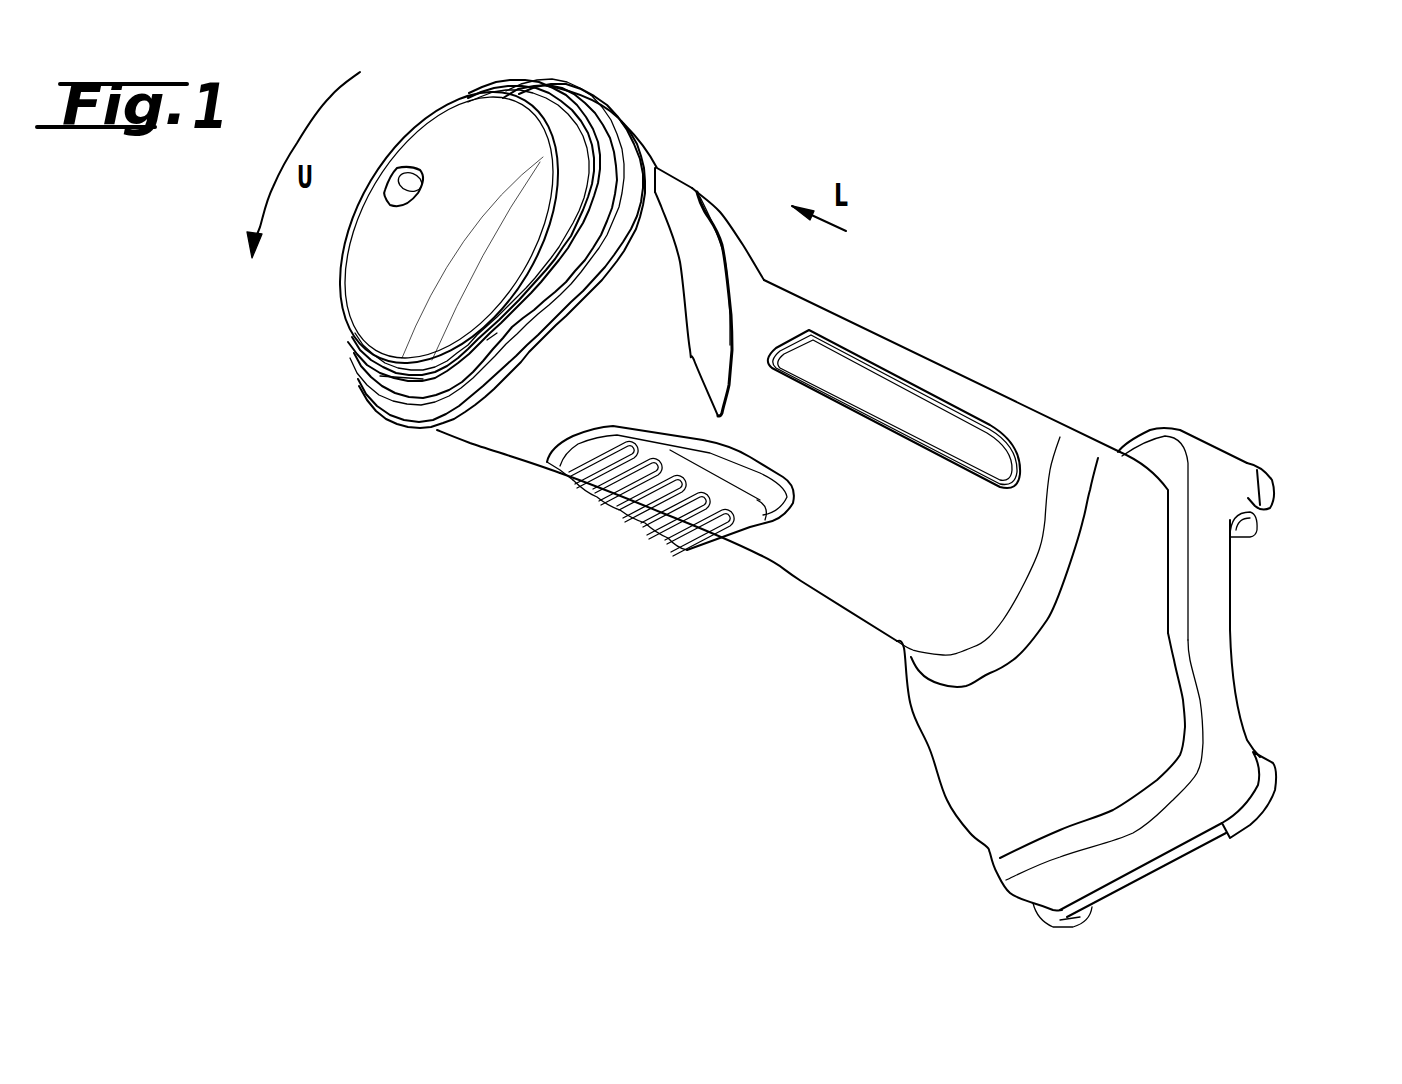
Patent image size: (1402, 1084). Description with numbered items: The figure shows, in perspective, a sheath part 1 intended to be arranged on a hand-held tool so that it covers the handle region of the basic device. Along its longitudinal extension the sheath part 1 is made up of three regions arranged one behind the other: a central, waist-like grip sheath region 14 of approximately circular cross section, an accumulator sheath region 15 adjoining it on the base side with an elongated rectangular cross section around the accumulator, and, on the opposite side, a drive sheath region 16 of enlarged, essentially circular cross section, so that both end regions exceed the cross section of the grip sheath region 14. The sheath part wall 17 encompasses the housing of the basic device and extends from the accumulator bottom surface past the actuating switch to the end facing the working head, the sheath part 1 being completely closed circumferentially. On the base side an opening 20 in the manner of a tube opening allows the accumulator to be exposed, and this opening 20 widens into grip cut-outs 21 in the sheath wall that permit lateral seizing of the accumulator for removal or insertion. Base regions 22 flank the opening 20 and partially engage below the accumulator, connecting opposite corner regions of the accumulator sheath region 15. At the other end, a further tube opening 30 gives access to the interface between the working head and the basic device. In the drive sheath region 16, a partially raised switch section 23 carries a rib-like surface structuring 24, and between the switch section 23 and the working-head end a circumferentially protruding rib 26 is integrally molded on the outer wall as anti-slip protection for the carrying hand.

The sheath part 1 is at (985, 347).
The grip sheath region 14 is at (839, 557).
The accumulator sheath region 15 is at (995, 796).
The drive sheath region 16 is at (523, 440).
The sheath part wall 17 is at (872, 343).
The opening 20 is at (1250, 638).
The grip cut-outs 21 is at (1230, 565).
The base regions 22 is at (1260, 797).
The switch section 23 is at (670, 537).
The rib-like surface structuring 24 is at (613, 500).
The rib 26 is at (440, 417).
The opening 30 is at (338, 299).